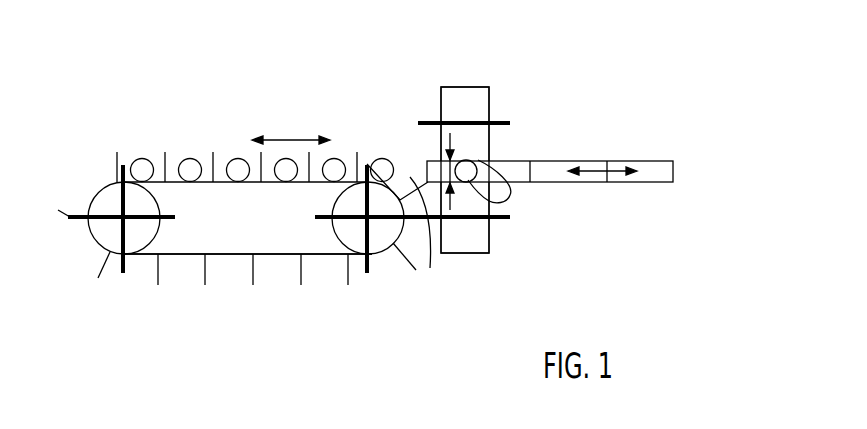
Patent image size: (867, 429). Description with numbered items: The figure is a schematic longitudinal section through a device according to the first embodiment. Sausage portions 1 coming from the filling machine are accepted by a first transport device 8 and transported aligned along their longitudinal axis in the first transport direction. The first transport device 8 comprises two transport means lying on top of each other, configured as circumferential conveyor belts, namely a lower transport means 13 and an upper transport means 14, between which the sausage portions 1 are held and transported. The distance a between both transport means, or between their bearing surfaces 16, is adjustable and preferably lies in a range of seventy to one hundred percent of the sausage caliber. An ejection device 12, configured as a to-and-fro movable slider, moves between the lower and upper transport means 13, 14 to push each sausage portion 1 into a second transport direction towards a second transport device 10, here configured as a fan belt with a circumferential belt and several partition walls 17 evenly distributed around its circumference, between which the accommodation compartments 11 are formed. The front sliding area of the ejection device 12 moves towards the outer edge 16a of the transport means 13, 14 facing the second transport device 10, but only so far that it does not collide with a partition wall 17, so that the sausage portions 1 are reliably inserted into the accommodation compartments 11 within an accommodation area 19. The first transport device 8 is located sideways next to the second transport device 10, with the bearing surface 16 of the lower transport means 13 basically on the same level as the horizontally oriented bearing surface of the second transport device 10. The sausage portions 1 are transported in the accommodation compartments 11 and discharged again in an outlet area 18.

The sausage portions 1 is at (192, 157).
The first transport device 8 is at (481, 70).
The second transport device 10 is at (327, 136).
The accommodation compartments 11 is at (342, 148).
The ejection device 12 is at (540, 160).
The lower transport means 13 is at (490, 235).
The upper transport means 14 is at (490, 100).
The bearing surface 16 is at (489, 201).
The outer edge 16a is at (420, 275).
The partition walls 17 is at (207, 275).
The outlet area 18 is at (76, 245).
The accommodation area 19 is at (408, 170).
The distance a is at (447, 149).